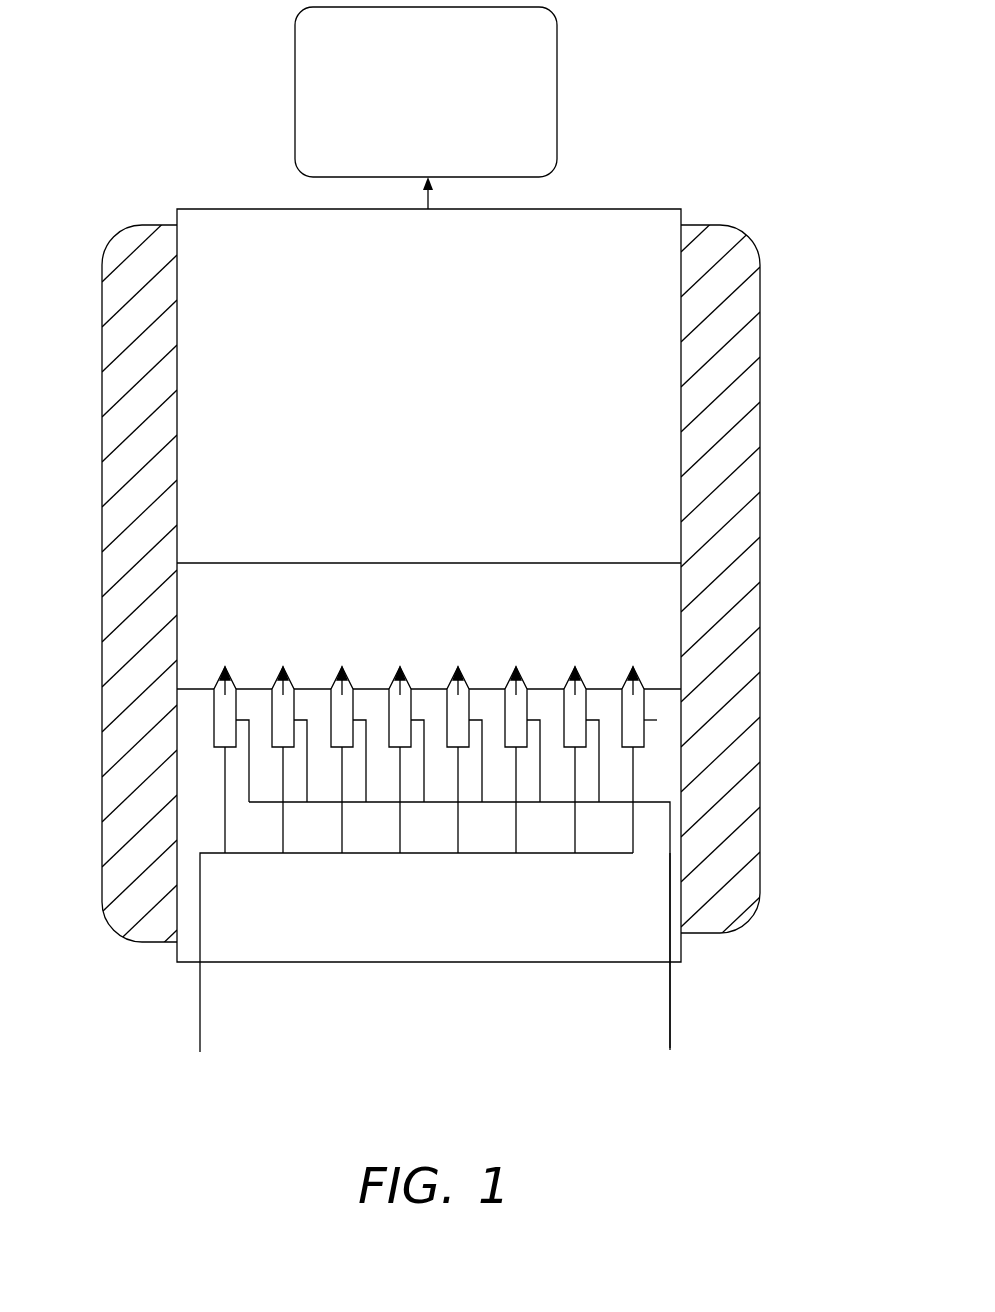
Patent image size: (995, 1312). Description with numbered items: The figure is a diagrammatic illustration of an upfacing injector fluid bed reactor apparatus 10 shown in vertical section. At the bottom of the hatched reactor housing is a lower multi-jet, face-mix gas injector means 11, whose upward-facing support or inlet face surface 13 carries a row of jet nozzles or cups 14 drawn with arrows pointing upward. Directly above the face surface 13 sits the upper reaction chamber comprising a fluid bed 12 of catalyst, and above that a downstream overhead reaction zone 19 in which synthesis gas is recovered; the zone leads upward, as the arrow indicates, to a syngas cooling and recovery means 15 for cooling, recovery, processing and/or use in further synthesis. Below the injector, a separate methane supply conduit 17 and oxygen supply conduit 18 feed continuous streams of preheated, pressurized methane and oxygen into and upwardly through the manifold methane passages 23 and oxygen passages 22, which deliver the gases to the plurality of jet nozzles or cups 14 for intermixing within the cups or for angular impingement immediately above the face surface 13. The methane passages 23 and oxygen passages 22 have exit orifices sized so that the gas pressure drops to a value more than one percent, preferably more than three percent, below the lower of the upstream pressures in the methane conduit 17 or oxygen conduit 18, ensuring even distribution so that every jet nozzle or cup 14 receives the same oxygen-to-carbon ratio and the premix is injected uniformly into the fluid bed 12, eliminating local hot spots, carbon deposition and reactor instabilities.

The upfacing gas-injector/fluid bed catalyst reactor apparatus 10 is at (762, 256).
The gas injector means 11 is at (675, 782).
The fluid bed 12 is at (662, 589).
The face surface 13 is at (660, 637).
The jet nozzles or cups 14 is at (645, 690).
The syngas cooling and recovery means 15 is at (557, 34).
The methane supply conduit 17 is at (672, 1026).
The oxygen supply conduit 18 is at (200, 1026).
The overhead reaction zone 19 is at (208, 383).
The oxygen passages 22 is at (293, 855).
The methane passages 23 is at (248, 752).